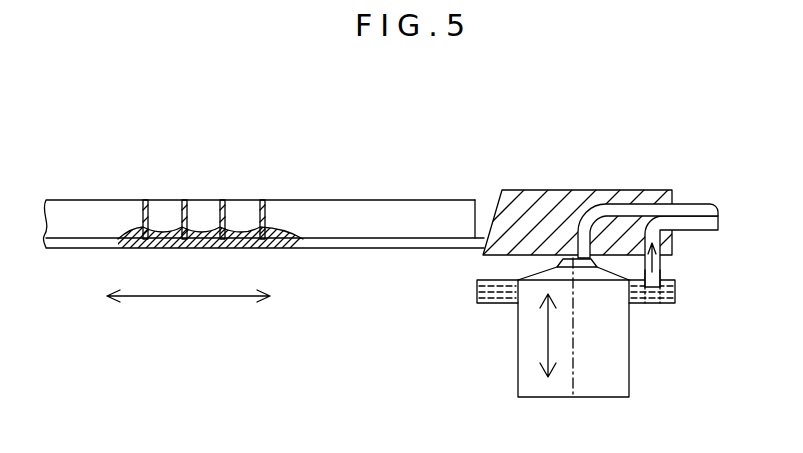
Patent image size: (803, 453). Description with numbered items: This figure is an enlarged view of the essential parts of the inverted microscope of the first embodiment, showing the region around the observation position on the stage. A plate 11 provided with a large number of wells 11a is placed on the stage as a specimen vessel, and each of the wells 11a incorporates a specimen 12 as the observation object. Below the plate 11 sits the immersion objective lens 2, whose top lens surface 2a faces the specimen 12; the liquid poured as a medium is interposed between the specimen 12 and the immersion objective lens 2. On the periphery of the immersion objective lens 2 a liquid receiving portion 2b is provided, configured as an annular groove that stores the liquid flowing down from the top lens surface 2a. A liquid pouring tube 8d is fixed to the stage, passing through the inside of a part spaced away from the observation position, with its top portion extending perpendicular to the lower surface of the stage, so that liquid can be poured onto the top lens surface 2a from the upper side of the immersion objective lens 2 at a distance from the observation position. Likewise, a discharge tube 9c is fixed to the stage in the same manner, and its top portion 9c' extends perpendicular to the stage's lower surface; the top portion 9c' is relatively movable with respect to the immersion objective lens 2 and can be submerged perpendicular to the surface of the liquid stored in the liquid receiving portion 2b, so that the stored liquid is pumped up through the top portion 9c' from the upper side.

The immersion objective lens 2 is at (652, 350).
The top lens surface 2a is at (557, 262).
The liquid receiving portion 2b is at (668, 303).
The liquid pouring tube 8d is at (702, 204).
The discharge tube 9c is at (683, 251).
The top portion of the discharge tube 9c' is at (687, 286).
The plate 11 is at (388, 187).
The wells 11a is at (130, 212).
The specimen 12 is at (130, 250).